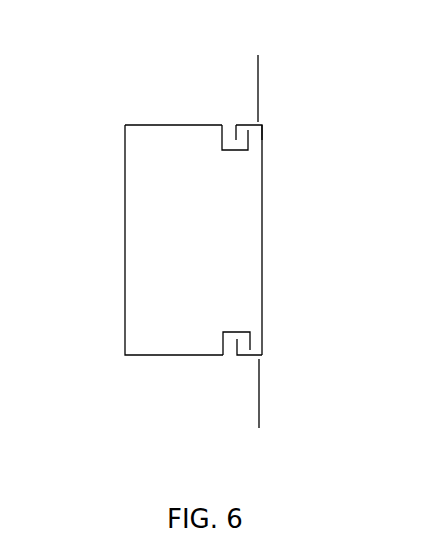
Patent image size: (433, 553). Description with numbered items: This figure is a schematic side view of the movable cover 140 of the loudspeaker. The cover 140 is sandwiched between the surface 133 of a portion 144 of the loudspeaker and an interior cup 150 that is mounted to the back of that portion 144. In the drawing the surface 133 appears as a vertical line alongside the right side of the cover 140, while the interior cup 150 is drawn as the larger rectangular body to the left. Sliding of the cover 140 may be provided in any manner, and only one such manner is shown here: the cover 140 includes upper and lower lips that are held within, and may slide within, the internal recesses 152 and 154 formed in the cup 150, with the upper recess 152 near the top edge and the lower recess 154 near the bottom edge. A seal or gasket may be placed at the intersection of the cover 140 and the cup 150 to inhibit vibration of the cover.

The surface 133 is at (265, 65).
The movable cover 140 is at (263, 239).
The portion 144 is at (267, 117).
The interior cup 150 is at (125, 217).
The internal recess 152 is at (229, 112).
The internal recess 154 is at (229, 372).